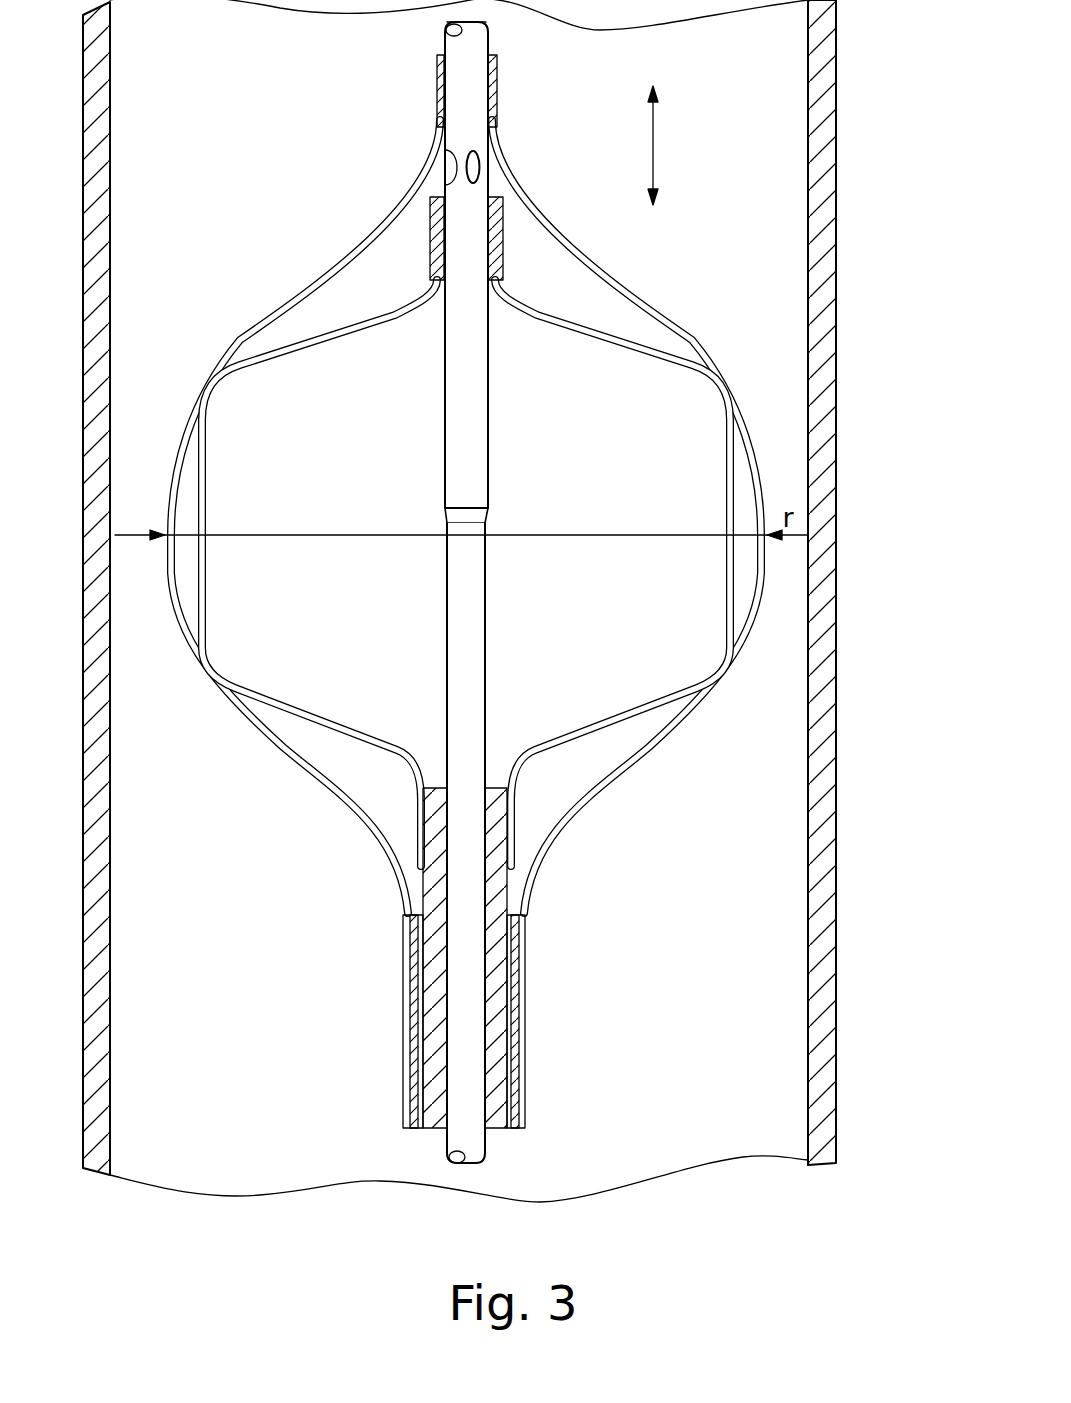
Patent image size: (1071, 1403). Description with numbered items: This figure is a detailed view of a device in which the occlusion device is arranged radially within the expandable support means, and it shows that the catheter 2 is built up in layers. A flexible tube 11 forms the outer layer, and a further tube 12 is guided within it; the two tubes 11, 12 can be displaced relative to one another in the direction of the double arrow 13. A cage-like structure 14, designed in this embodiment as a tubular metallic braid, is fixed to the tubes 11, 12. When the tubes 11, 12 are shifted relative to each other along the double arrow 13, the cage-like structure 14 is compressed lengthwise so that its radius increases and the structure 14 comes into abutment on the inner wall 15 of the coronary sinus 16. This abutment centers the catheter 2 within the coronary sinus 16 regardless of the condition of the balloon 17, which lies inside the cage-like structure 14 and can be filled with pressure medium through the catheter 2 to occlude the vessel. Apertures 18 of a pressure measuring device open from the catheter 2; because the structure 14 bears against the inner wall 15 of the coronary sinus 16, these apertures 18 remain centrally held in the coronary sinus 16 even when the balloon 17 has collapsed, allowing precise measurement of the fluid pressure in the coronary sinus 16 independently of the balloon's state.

The catheter 2 is at (465, 1138).
The flexible tube 11 is at (408, 948).
The further tube 12 is at (470, 45).
The double arrow 13 is at (653, 145).
The cage-like structure 14 is at (667, 317).
The inner wall 15 is at (808, 893).
The coronary sinus 16 is at (765, 967).
The balloon 17 is at (285, 348).
The apertures of a pressure measuring device 18 is at (463, 157).